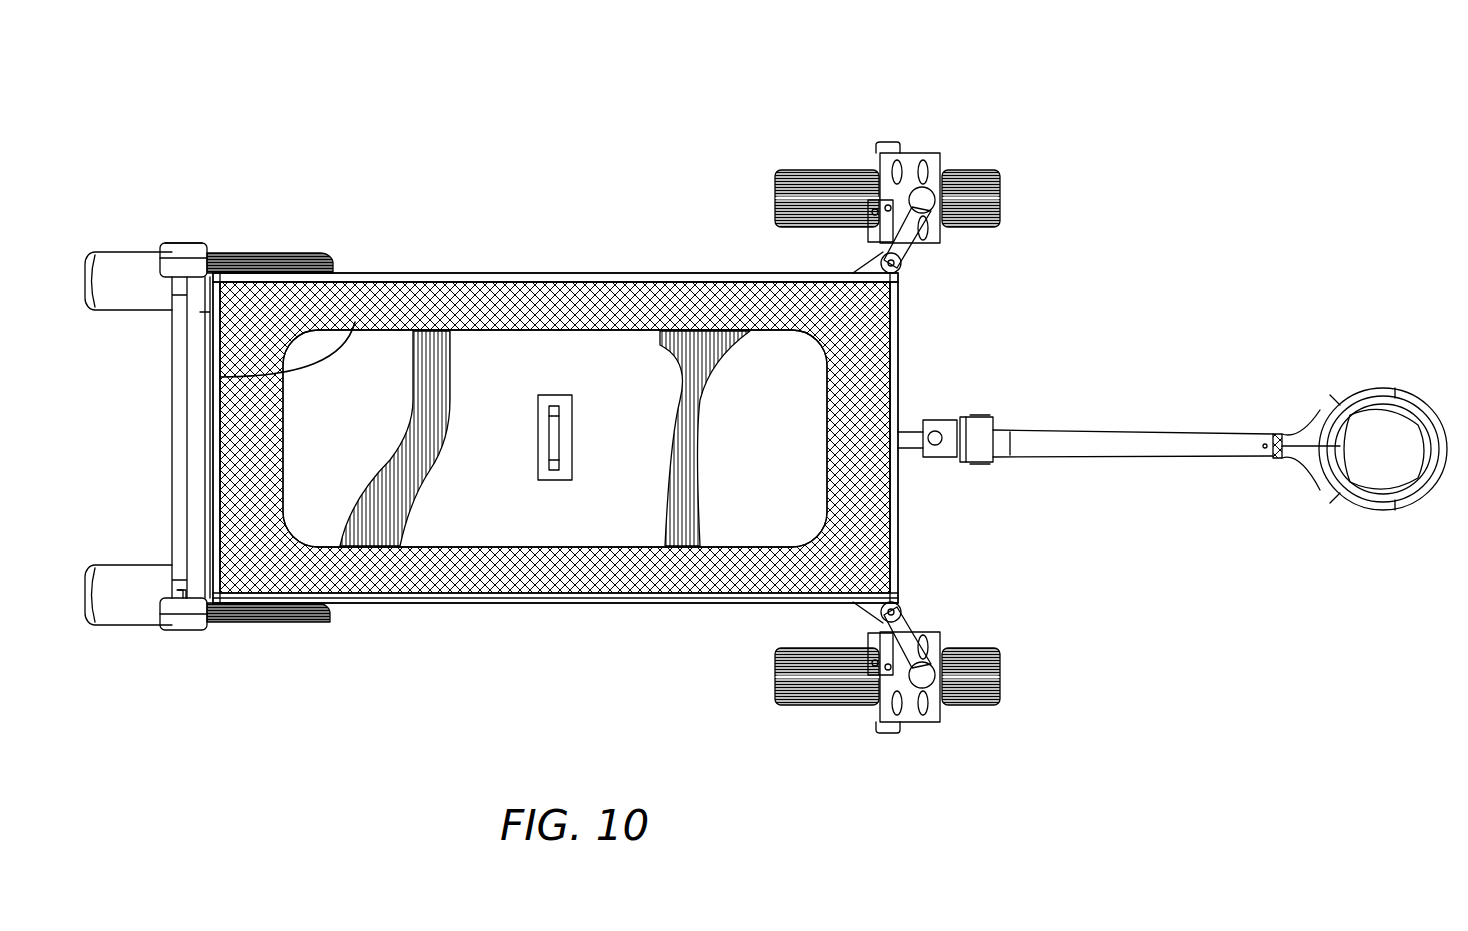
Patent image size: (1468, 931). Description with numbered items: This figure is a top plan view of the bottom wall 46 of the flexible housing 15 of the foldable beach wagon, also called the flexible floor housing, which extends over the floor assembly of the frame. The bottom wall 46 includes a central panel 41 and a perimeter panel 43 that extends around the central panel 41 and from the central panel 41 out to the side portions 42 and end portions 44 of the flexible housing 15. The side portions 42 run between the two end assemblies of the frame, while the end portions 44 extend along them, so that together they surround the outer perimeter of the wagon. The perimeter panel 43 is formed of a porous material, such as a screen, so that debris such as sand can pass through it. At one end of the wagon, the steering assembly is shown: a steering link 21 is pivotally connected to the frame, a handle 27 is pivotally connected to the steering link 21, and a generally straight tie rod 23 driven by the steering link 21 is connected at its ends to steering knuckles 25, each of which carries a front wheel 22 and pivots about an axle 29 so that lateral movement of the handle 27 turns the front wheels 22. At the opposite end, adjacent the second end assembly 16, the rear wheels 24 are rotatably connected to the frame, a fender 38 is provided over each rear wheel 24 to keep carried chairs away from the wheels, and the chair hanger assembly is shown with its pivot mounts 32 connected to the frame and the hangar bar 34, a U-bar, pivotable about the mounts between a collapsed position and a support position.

The flexible housing 15 is at (547, 605).
The second end assembly 16 is at (355, 330).
The steering link 21 is at (945, 460).
The front wheel 22 is at (1000, 185).
The tie rod 23 is at (880, 215).
The rear wheel 24 is at (288, 252).
The steering knuckle 25 is at (905, 150).
The handle 27 is at (1180, 437).
The axle 29 is at (925, 205).
The pivot mount 32 is at (180, 248).
The hangar bar 34 is at (178, 432).
The fender 38 is at (118, 292).
The central panel 41 is at (597, 355).
The side portion 42 is at (437, 272).
The perimeter panel 43 is at (527, 300).
The end portion 44 is at (900, 355).
The bottom wall 46 is at (650, 370).